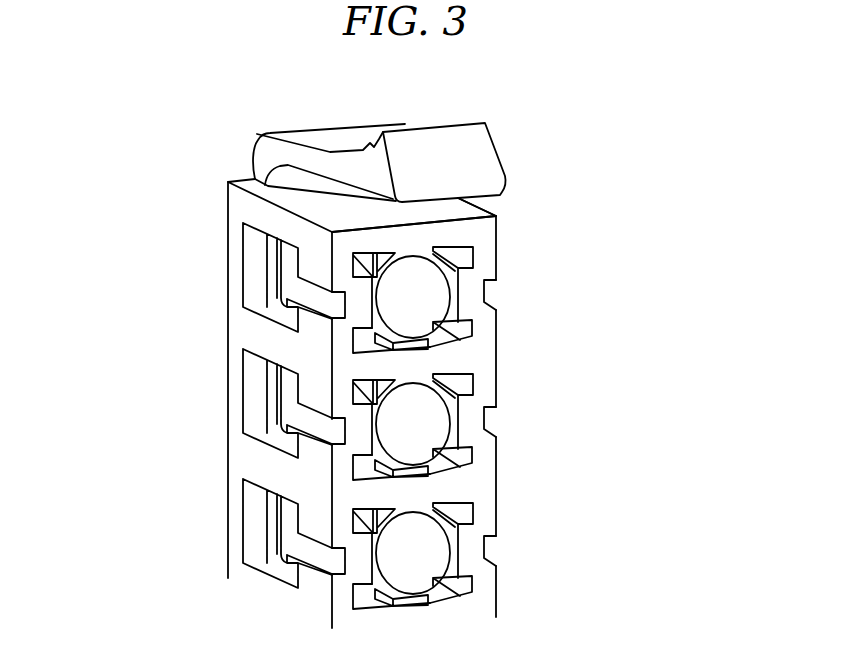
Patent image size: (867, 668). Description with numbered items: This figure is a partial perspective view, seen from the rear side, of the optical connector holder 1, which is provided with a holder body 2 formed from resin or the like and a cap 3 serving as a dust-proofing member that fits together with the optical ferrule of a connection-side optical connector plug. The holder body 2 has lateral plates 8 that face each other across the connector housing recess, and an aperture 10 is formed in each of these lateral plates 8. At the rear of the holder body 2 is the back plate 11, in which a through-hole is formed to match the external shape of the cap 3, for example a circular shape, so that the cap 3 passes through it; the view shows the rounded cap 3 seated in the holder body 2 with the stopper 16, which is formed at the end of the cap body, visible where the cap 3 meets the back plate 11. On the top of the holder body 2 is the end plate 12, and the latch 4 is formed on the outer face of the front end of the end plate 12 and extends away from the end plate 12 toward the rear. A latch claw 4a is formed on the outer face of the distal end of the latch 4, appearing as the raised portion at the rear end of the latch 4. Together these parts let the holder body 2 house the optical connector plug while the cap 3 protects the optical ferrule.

The optical connector holder 1 is at (540, 202).
The holder body 2 is at (498, 253).
The cap 3 is at (452, 287).
The latch 4 is at (498, 146).
The latch claw 4a is at (458, 118).
The lateral plate 8 is at (497, 392).
The aperture 10 is at (252, 260).
The back plate 11 is at (353, 472).
The end plate 12 is at (487, 205).
The stopper 16 is at (432, 313).